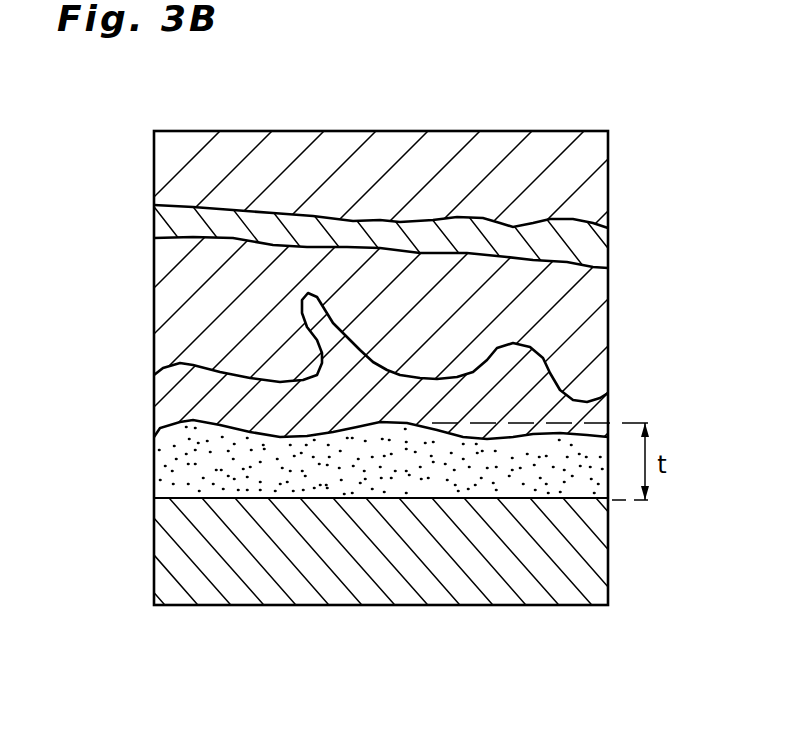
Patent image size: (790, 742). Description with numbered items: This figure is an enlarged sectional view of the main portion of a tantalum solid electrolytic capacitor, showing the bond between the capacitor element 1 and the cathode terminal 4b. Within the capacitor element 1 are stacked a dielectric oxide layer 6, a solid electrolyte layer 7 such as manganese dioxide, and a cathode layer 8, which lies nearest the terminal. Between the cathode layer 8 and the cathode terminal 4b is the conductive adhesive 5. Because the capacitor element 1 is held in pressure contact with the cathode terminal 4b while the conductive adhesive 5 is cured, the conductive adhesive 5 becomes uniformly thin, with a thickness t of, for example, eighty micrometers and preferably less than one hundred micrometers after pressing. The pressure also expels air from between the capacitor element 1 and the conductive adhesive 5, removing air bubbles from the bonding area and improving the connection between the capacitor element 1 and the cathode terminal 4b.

The capacitor element 1 is at (429, 168).
The dielectric oxide layer 6 is at (588, 242).
The solid electrolyte layer 7 is at (430, 270).
The cathode layer 8 is at (528, 367).
The conductive adhesive 5 is at (373, 470).
The cathode terminal 4b is at (432, 557).